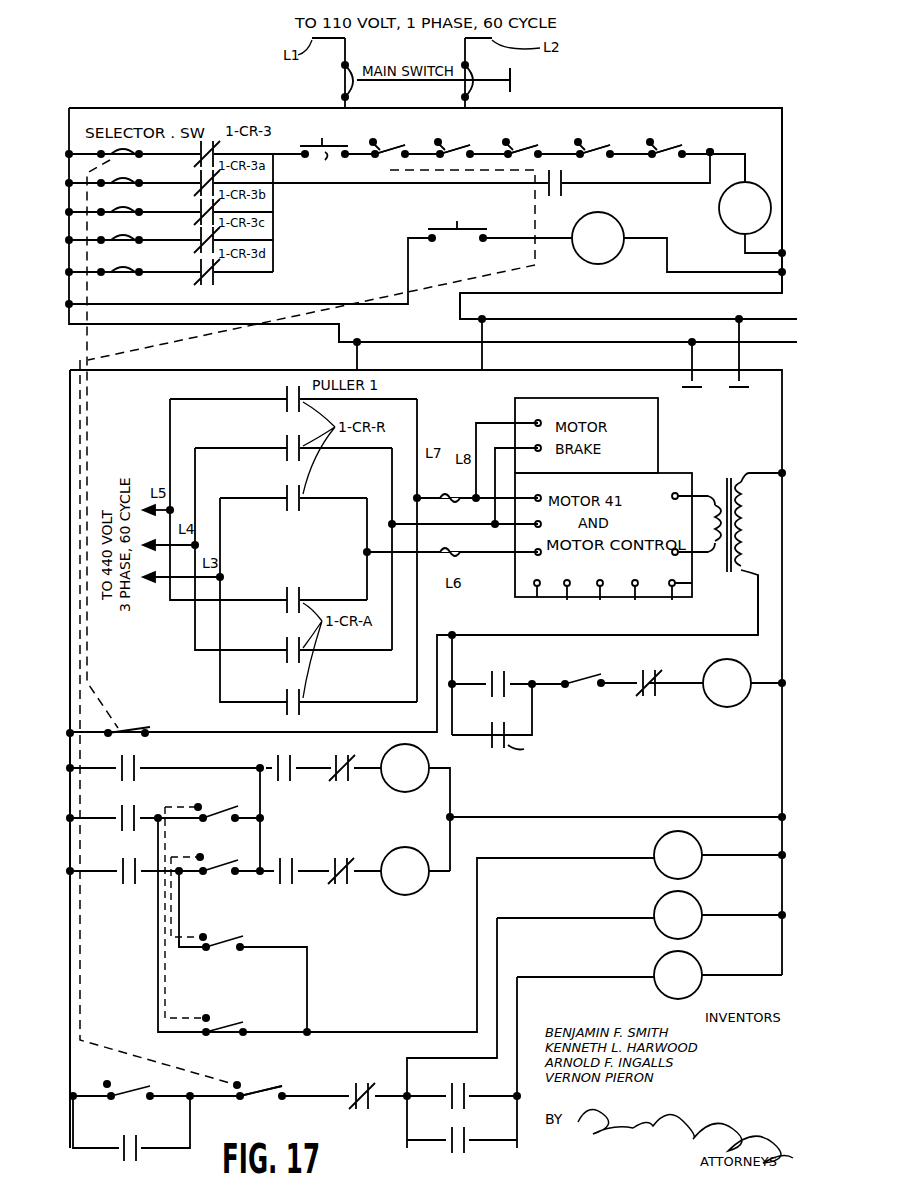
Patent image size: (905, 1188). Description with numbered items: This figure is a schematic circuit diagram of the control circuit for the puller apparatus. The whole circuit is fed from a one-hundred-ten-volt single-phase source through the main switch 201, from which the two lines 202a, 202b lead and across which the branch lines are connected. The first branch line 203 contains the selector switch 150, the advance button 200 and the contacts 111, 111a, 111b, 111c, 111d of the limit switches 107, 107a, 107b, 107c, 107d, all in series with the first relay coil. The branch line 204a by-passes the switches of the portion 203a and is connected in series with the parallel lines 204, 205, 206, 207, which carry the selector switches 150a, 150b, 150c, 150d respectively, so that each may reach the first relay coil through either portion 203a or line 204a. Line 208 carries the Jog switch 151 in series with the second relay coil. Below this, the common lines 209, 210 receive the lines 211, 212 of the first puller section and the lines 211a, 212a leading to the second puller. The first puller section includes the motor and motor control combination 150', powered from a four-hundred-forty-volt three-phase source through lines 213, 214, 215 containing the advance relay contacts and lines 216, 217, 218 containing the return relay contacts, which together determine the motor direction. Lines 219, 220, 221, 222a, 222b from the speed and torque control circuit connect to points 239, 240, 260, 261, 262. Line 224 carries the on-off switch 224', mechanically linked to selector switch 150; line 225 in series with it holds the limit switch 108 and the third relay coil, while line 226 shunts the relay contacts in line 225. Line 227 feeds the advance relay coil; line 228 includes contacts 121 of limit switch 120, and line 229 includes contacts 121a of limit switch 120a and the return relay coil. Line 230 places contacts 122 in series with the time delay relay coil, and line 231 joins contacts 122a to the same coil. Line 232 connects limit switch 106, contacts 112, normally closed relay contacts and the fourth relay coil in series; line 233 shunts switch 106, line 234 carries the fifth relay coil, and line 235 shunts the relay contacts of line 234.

The main switch 201 is at (345, 80).
The line 202a is at (158, 92).
The line 202b is at (575, 108).
The first branch line 203 is at (69, 154).
The line 204 is at (69, 183).
The line 205 is at (69, 212).
The line 206 is at (69, 240).
The line 207 is at (69, 272).
The line 208 is at (69, 304).
The selector switch 150 is at (138, 161).
The selector switch 150a is at (139, 183).
The selector switch 150b is at (139, 212).
The selector switch 150c is at (139, 240).
The selector switch 150d is at (139, 272).
The advance button 200 is at (322, 146).
The limit switch 107 is at (256, 1112).
The limit switch 107a is at (471, 138).
The limit switch 107b is at (541, 138).
The limit switch 107c is at (613, 138).
The limit switch 107d is at (695, 150).
The limit switch contacts 111 is at (344, 162).
The limit switch contacts 111a is at (435, 160).
The limit switch contacts 111b is at (506, 160).
The limit switch contacts 111c is at (578, 158).
The limit switch contacts 111d is at (652, 158).
The portion of line 203 203a is at (738, 152).
The branch line 204a is at (606, 183).
The Jog switch 151 is at (477, 224).
The common line 209 is at (338, 324).
The common line 210 is at (540, 319).
The line 211 is at (100, 370).
The line 212 is at (548, 370).
The line 211a is at (690, 360).
The line 212a is at (744, 365).
The motor and motor control combination 150' is at (726, 532).
The line 216 is at (170, 434).
The line 217 is at (195, 480).
The line 218 is at (220, 530).
The line 215 is at (170, 596).
The line 214 is at (195, 648).
The line 213 is at (220, 690).
The connection point 239 is at (552, 576).
The connection point 240 is at (570, 581).
The connection point 260 is at (604, 582).
The connection point 261 is at (638, 582).
The connection point 262 is at (676, 578).
The line 219 is at (530, 598).
The line 220 is at (567, 598).
The line 221 is at (600, 598).
The line 222a is at (635, 598).
The line 222b is at (672, 598).
The line 225 is at (468, 684).
The line 226 is at (470, 738).
The limit switch 108 is at (575, 682).
The line 224 is at (50, 734).
The on-off switch 224' is at (139, 718).
The line 227 is at (70, 768).
The line 228 is at (70, 818).
The line 229 is at (70, 871).
The limit switch 120 is at (208, 812).
The switch contacts 121 is at (238, 806).
The limit switch 120a is at (218, 838).
The switch contacts 121a is at (226, 871).
The switch contacts 122a is at (208, 952).
The switch contacts 122 is at (224, 1036).
The line 230 is at (158, 916).
The line 231 is at (176, 944).
The line 232 is at (73, 1094).
The line 233 is at (73, 1144).
The line 234 is at (418, 1088).
The line 235 is at (406, 1140).
The limit switch 106 is at (144, 1070).
The switch contacts 112 is at (264, 1092).